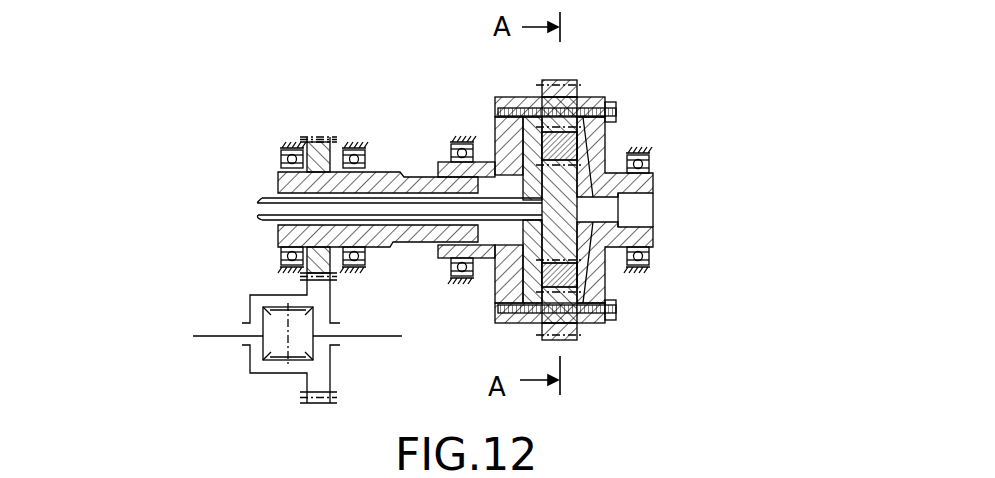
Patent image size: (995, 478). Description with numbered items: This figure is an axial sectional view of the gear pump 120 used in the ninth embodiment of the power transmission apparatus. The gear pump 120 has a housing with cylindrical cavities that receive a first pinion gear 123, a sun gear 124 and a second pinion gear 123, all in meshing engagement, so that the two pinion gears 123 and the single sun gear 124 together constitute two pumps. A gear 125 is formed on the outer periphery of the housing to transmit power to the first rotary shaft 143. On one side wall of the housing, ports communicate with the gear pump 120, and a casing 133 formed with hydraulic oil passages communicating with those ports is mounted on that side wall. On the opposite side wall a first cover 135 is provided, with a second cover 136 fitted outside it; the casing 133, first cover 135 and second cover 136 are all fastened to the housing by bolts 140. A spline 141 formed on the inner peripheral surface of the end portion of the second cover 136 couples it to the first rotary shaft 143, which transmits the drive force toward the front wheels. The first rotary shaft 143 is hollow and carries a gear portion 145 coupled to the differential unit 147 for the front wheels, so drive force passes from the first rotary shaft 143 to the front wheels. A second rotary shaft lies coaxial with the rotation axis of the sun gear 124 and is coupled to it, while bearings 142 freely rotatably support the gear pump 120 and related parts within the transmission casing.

The gear pump 120 is at (585, 332).
The pinion gear 123 is at (565, 147).
The sun gear 124 is at (555, 188).
The gear 125 is at (562, 85).
The casing 133 is at (598, 292).
The first cover 135 is at (532, 97).
The second cover 136 is at (505, 97).
The bolts 140 is at (617, 110).
The spline 141 is at (262, 198).
The bearings 142 is at (290, 148).
The first rotary shaft 143 is at (386, 248).
The gear portion 145 is at (312, 276).
The differential unit 147 is at (345, 358).